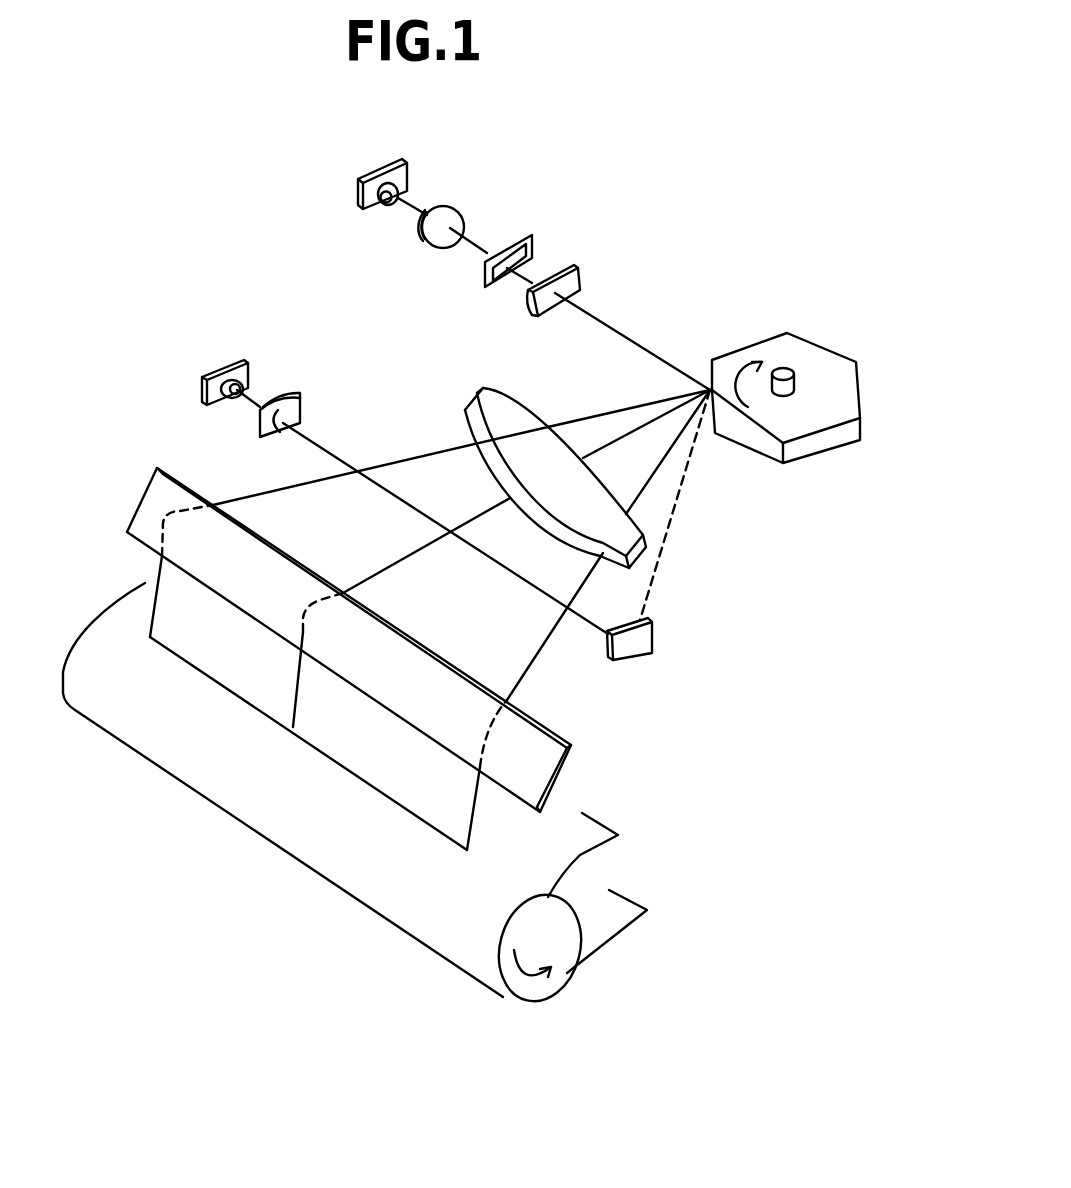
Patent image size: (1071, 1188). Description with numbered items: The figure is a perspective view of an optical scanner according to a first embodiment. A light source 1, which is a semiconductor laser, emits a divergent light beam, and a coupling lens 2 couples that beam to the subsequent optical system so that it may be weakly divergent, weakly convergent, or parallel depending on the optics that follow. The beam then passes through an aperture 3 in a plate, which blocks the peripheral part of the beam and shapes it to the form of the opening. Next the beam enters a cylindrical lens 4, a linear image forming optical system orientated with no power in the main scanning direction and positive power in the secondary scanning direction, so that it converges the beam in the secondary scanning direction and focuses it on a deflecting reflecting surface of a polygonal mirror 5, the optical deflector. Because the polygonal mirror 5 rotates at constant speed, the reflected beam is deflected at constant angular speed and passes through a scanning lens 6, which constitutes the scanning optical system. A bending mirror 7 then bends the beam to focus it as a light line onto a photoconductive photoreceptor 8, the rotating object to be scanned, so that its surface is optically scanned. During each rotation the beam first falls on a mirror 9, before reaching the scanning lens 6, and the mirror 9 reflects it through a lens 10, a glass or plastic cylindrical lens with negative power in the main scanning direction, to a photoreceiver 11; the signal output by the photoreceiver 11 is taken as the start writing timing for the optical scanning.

The light source 1 is at (407, 163).
The coupling lens 2 is at (463, 210).
The aperture 3 is at (535, 243).
The cylindrical lens 4 is at (583, 277).
The polygonal mirror 5 is at (828, 352).
The scanning lens 6 is at (483, 389).
The bending mirror 7 is at (140, 495).
The photoconductive photoreceptor 8 is at (590, 853).
The mirror 9 is at (654, 643).
The lens 10 is at (300, 400).
The photoreceiver 11 is at (245, 362).